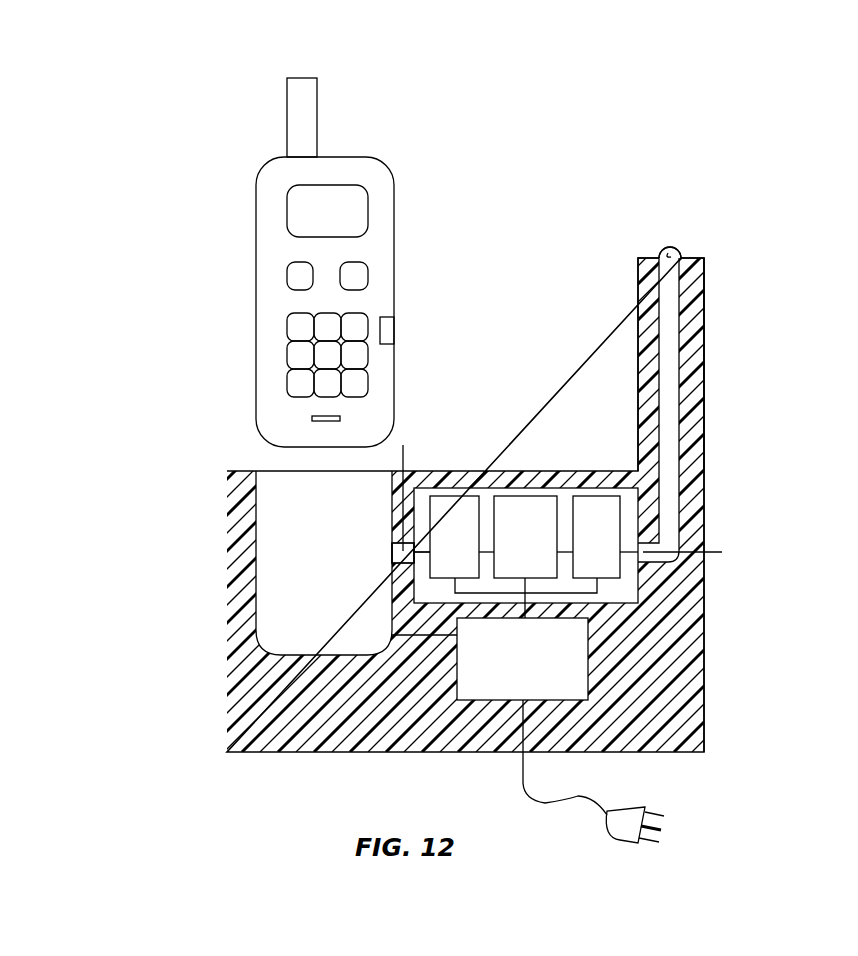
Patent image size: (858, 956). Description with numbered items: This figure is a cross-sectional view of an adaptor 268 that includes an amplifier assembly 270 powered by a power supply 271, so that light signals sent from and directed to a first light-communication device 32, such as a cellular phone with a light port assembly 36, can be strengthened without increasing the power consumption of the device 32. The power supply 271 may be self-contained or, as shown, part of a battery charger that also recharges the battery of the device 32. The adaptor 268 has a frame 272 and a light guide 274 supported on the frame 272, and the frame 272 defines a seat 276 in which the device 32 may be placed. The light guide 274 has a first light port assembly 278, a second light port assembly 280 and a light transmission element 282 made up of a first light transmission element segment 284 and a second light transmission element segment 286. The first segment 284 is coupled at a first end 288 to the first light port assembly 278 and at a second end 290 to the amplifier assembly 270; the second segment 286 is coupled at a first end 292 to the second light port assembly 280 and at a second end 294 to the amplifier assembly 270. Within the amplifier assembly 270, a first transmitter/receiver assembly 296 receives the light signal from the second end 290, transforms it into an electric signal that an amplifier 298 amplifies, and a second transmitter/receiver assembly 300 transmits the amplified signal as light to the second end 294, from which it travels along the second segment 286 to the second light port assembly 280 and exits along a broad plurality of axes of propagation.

The first light-communication device 32 is at (380, 234).
The light port assembly 36 is at (388, 333).
The adaptor 268 is at (548, 231).
The amplifier assembly 270 is at (512, 488).
The power supply 271 is at (505, 690).
The frame 272 is at (773, 749).
The light guide 274 is at (690, 497).
The seat 276 is at (276, 554).
The first light port assembly 278 is at (386, 567).
The second light port assembly 280 is at (680, 236).
The light transmission element 282 is at (683, 442).
The first light transmission element segment 284 is at (403, 445).
The second light transmission element segment 286 is at (662, 355).
The first end 288 is at (392, 552).
The second end 290 is at (418, 515).
The first end 292 is at (671, 256).
The second end 294 is at (689, 552).
The first transmitter/receiver assembly 296 is at (473, 564).
The amplifier 298 is at (544, 564).
The second transmitter/receiver assembly 300 is at (579, 564).